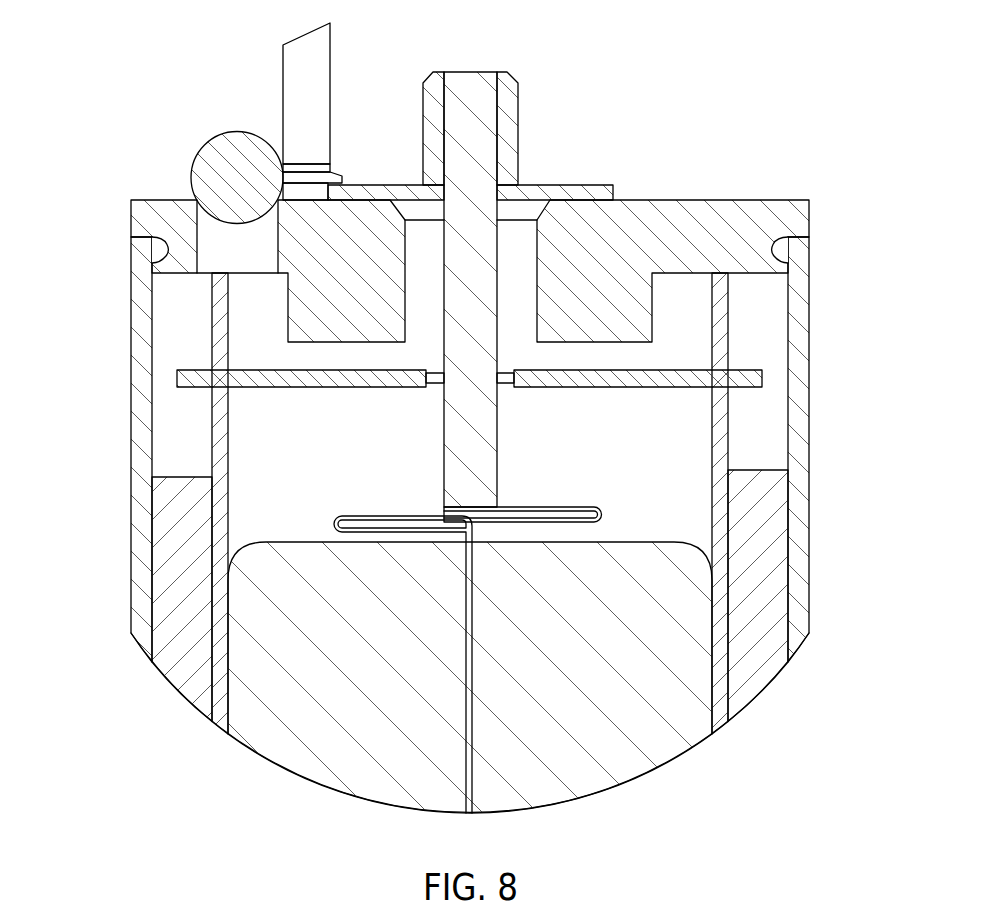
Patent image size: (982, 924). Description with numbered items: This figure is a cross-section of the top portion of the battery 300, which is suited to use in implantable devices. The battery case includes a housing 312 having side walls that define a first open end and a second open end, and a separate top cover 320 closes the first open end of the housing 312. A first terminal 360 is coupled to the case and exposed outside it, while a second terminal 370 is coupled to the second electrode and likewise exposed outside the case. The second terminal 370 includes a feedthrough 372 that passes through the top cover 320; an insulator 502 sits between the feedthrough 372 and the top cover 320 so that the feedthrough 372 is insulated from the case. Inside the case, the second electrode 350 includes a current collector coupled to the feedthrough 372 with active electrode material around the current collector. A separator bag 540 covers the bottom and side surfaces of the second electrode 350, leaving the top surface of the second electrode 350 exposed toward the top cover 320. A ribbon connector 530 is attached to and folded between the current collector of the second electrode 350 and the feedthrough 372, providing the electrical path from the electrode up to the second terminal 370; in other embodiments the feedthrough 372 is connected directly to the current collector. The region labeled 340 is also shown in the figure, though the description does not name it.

The battery 300 is at (708, 73).
The housing 312 is at (138, 353).
The top cover 320 is at (727, 212).
The potting compound 340 is at (173, 566).
The second electrode 350 is at (616, 545).
The first terminal 360 is at (282, 88).
The second terminal 370 is at (472, 80).
The feedthrough 372 is at (473, 247).
The insulator 502 is at (417, 257).
The ribbon connector 530 is at (405, 515).
The separator bag 540 is at (217, 435).